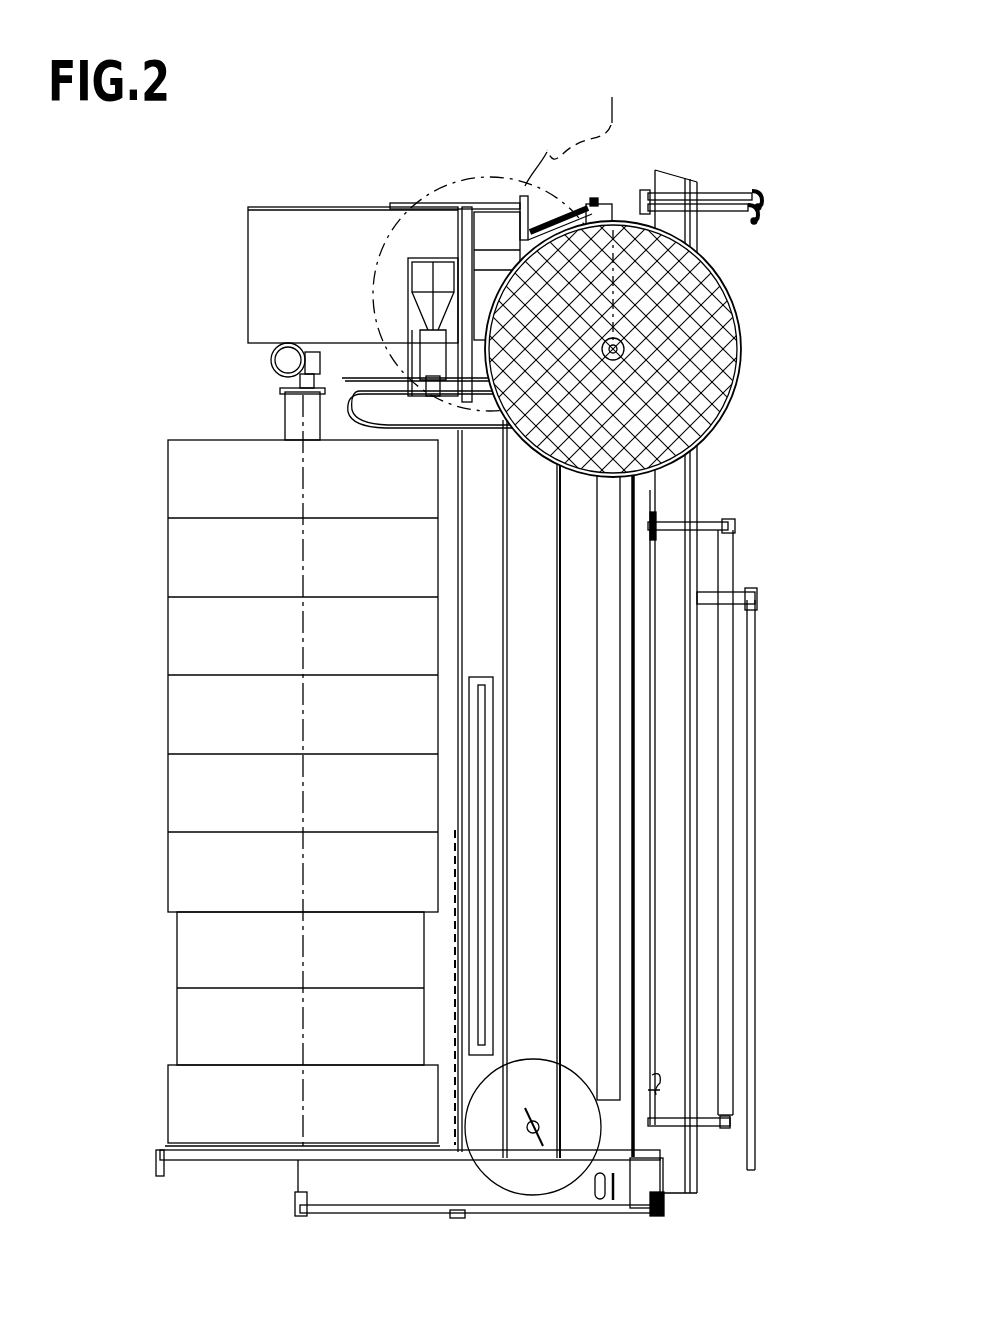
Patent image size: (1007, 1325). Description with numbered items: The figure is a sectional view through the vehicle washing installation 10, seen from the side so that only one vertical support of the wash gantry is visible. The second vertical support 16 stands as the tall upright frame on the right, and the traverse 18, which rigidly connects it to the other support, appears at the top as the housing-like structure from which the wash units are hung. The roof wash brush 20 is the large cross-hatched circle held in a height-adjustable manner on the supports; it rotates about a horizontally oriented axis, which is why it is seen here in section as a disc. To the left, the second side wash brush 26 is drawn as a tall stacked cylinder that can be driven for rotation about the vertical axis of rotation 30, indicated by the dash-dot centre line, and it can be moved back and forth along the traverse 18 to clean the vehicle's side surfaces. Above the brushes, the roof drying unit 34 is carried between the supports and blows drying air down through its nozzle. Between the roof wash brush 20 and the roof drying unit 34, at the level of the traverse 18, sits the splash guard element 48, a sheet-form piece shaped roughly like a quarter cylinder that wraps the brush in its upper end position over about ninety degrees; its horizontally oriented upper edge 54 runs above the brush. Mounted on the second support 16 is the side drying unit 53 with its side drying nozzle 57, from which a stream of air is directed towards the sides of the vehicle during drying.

The vehicle washing installation 10 is at (696, 118).
The second vertical support 16 is at (608, 490).
The traverse 18 is at (483, 222).
The roof wash brush 20 is at (745, 382).
The second side wash brush 26 is at (168, 570).
The vertical axis of rotation 30 is at (303, 553).
The roof drying unit 34 is at (412, 254).
The splash guard element 48 is at (515, 250).
The side drying unit 53 is at (495, 798).
The upper edge 54 is at (657, 221).
The side drying nozzle 57 is at (480, 848).